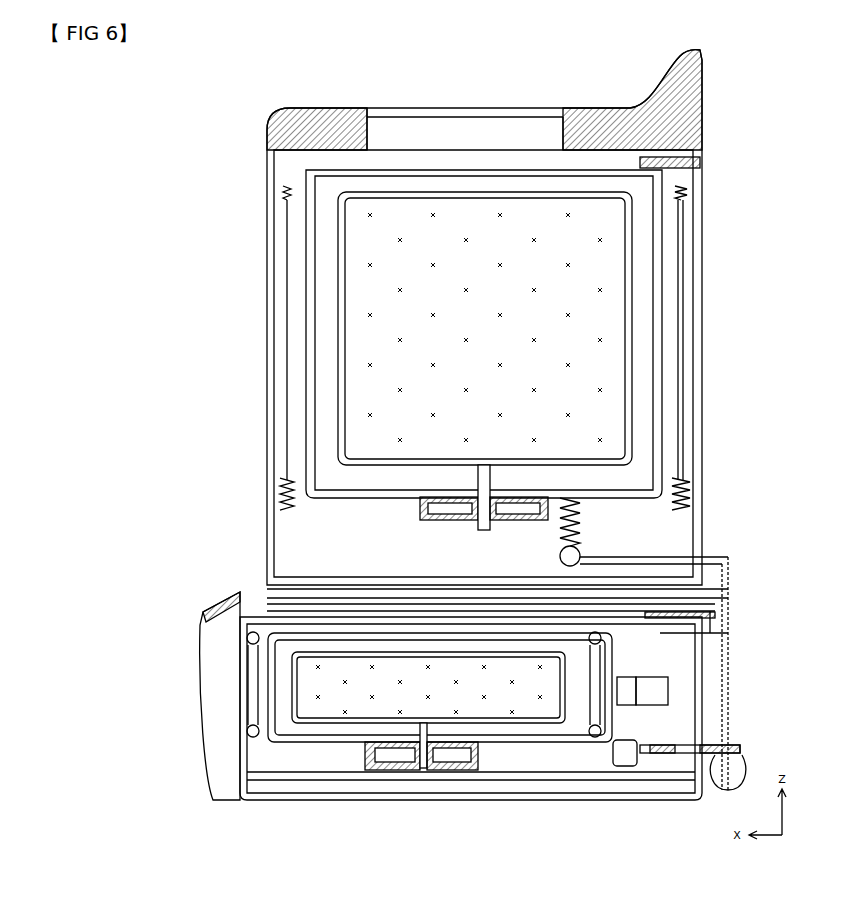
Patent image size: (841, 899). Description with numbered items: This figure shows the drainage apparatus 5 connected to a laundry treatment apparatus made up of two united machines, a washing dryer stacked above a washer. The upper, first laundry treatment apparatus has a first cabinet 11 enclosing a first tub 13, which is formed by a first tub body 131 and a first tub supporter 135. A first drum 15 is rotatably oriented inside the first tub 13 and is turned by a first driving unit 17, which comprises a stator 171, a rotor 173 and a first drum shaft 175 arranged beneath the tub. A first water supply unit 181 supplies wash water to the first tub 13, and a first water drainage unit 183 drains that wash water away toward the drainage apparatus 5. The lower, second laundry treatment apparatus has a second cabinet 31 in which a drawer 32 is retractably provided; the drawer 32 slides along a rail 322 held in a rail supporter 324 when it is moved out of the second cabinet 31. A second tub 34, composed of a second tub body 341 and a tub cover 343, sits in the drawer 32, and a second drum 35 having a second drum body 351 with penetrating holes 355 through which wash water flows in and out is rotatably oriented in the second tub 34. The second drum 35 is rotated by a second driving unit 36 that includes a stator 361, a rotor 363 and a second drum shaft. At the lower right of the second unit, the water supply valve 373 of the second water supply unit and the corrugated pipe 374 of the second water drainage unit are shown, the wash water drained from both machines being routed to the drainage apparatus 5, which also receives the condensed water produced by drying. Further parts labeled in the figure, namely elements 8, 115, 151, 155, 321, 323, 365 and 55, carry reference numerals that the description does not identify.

The drainage apparatus 5 is at (742, 752).
The partition plate 8 is at (337, 589).
The first cabinet 11 is at (267, 207).
The first tub 13 is at (430, 340).
The first tub body 131 is at (310, 375).
The first tub supporter 135 is at (285, 416).
The first drum 15 is at (401, 328).
The tray 151 is at (357, 288).
The mesh 155 is at (368, 257).
The first driving unit 17 is at (484, 448).
The stator 171 is at (438, 497).
The rotor 173 is at (470, 490).
The first drum shaft 175 is at (490, 485).
The frame 115 is at (300, 573).
The first water supply unit 181 is at (708, 160).
The first water drainage unit 183 is at (590, 552).
The second cabinet 31 is at (702, 690).
The drawer 32 is at (198, 622).
The rail 321 is at (730, 633).
The rail 322 is at (625, 677).
The guide 323 is at (728, 613).
The rail supporter 324 is at (650, 677).
The second tub 34 is at (363, 687).
The second tub body 341 is at (270, 680).
The tub cover 343 is at (247, 640).
The second drum 35 is at (428, 763).
The second drum body 351 is at (333, 742).
The penetrating hole 355 is at (360, 742).
The second driving unit 36 is at (421, 798).
The stator 361 is at (400, 770).
The rotor 363 is at (452, 790).
The drive shaft 365 is at (427, 768).
The water supply valve 373 is at (623, 766).
The corrugated pipe 374 is at (655, 756).
The power cord 55 is at (738, 790).